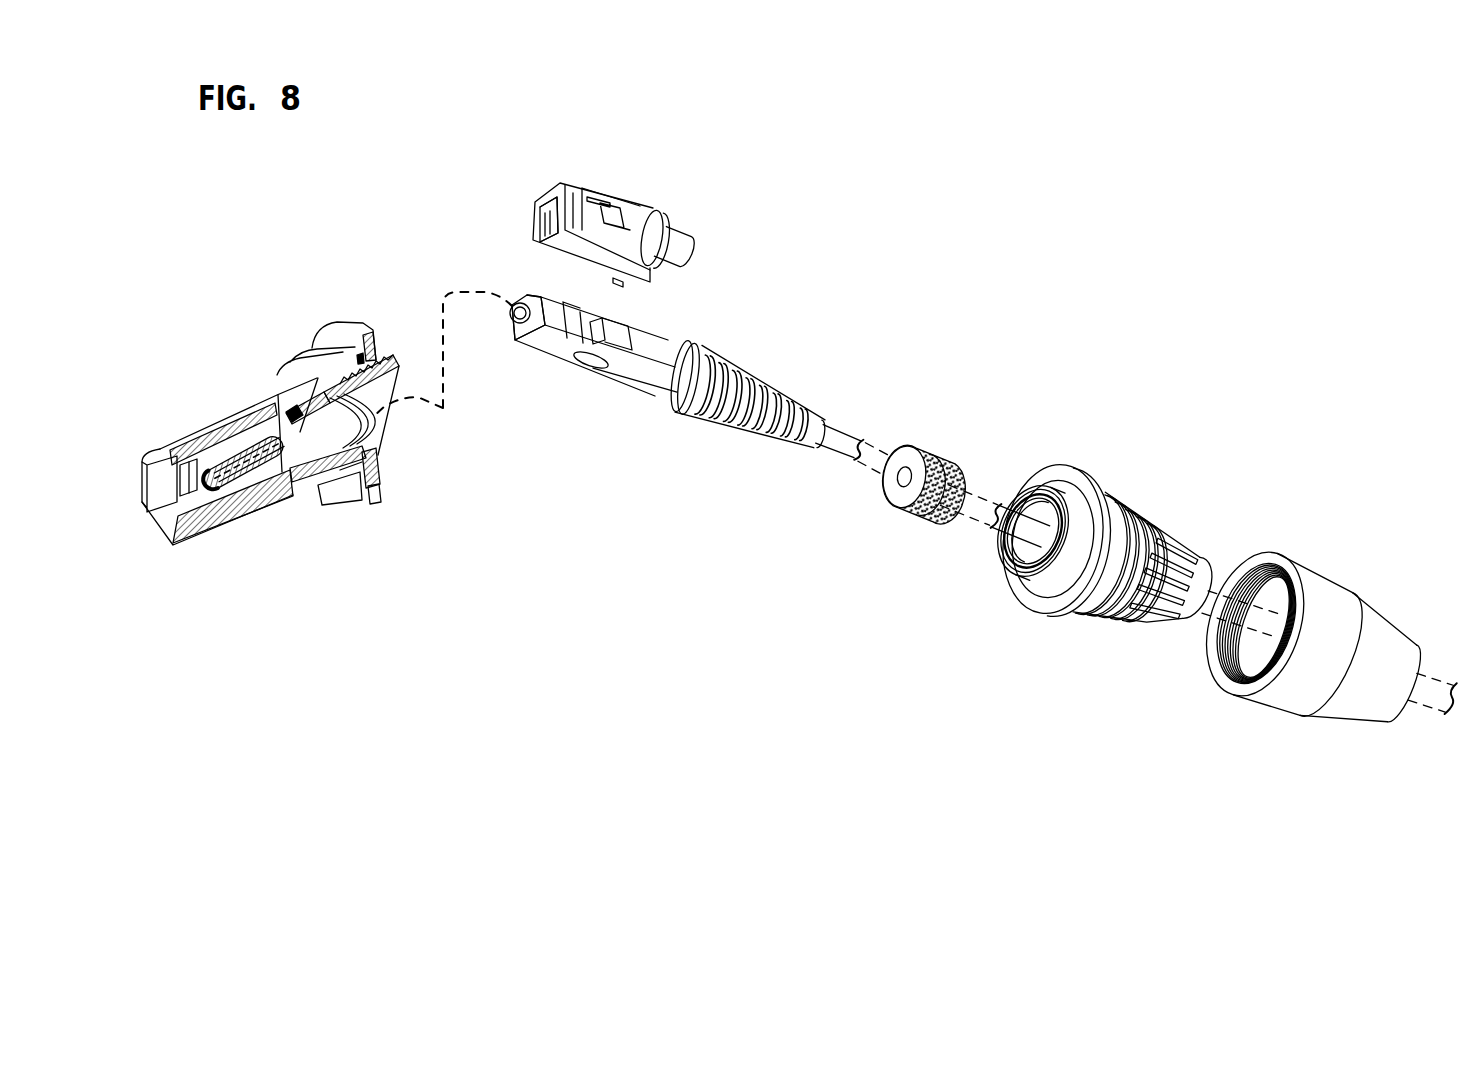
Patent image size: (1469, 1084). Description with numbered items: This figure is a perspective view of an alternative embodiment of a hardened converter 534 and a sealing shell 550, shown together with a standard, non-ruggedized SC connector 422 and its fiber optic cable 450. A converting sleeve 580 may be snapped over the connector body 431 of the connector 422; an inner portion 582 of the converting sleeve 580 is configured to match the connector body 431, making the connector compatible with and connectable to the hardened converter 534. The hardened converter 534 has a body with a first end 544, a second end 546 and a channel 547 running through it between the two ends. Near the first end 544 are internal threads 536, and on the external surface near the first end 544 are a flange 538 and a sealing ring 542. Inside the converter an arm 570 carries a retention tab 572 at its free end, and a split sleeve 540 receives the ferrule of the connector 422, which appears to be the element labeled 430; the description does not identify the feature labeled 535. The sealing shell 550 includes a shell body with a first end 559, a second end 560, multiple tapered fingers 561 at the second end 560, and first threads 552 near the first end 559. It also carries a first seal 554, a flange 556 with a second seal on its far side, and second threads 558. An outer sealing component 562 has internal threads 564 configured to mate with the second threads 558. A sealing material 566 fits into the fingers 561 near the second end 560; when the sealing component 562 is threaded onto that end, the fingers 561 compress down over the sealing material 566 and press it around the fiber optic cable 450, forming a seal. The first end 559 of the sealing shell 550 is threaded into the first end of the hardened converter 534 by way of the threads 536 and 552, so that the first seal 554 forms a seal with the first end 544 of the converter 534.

The SC connector 422 is at (697, 320).
The ferrule 430 is at (516, 315).
The connector body 431 is at (552, 343).
The fiber optic cable 450 is at (973, 513).
The hardened converter 534 is at (235, 388).
The housing top wall 535 is at (211, 425).
The internal threads 536 is at (388, 430).
The flange 538 is at (352, 325).
The split sleeve 540 is at (250, 485).
The sealing ring 542 is at (367, 497).
The first end 544 is at (389, 364).
The second end 546 is at (163, 527).
The channel 547 is at (166, 486).
The sealing shell 550 is at (1079, 559).
The first threads 552 is at (1033, 531).
The first seal 554 is at (1053, 539).
The flange 556 is at (1137, 571).
The second threads 558 is at (1127, 566).
The first end 559 is at (1033, 531).
The second end 560 is at (1198, 590).
The tapered fingers 561 is at (1167, 582).
The outer sealing component 562 is at (1324, 654).
The internal threads 564 is at (1256, 623).
The sealing material 566 is at (936, 430).
The arm 570 is at (306, 395).
The retention tab 572 is at (297, 425).
The converting sleeve 580 is at (631, 187).
The inner portion 582 is at (556, 196).